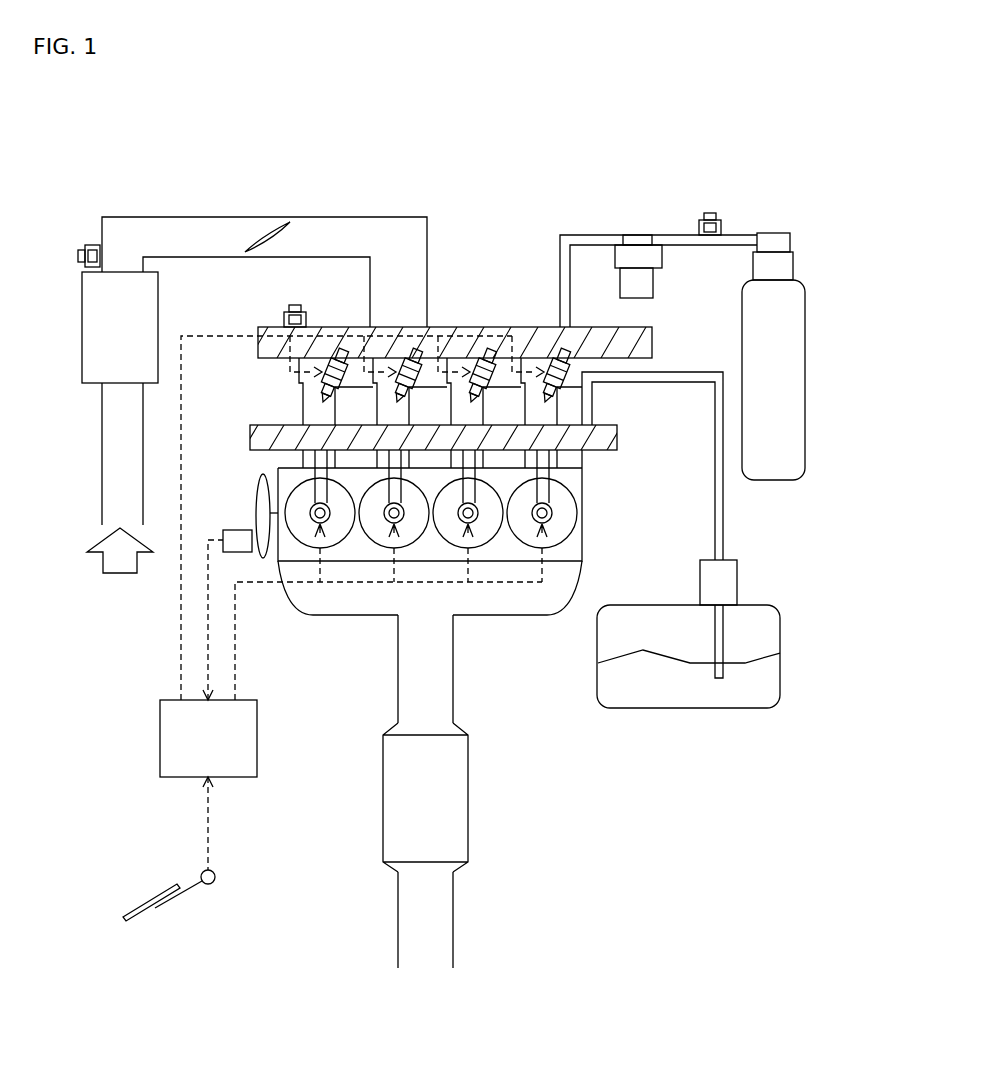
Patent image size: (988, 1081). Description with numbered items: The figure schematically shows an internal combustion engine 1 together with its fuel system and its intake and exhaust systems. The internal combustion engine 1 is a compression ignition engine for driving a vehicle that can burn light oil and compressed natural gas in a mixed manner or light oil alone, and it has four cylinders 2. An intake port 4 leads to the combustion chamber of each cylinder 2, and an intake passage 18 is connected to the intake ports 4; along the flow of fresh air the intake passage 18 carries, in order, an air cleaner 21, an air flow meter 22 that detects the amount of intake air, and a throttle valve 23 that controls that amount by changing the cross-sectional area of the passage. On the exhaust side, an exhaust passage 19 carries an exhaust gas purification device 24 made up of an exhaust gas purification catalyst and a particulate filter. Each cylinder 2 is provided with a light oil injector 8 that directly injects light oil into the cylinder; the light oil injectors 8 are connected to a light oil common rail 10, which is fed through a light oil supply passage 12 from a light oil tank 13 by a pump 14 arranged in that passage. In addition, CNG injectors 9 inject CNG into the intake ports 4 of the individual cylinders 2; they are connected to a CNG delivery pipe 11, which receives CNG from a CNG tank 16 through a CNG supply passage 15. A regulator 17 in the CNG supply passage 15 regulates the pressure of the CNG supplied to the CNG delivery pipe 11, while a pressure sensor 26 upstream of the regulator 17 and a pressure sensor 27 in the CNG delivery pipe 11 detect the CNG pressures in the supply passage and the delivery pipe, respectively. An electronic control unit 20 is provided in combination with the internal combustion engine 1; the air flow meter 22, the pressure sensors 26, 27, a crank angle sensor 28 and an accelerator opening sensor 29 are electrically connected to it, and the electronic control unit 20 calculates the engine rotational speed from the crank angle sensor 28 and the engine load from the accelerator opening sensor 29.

The internal combustion engine 1 is at (582, 540).
The cylinder 2 is at (590, 480).
The intake port 4 is at (299, 392).
The light oil injector 8 is at (553, 508).
The CNG injector 9 is at (570, 392).
The light oil common rail 10 is at (618, 437).
The CNG delivery pipe 11 is at (655, 342).
The light oil supply passage 12 is at (713, 487).
The light oil tank 13 is at (670, 708).
The pump 14 is at (737, 558).
The CNG supply passage 15 is at (593, 234).
The CNG tank 16 is at (806, 344).
The regulator 17 is at (665, 260).
The intake passage 18 is at (342, 216).
The exhaust passage 19 is at (453, 678).
The electronic control unit 20 is at (160, 738).
The air cleaner 21 is at (82, 325).
The air flow meter 22 is at (91, 244).
The throttle valve 23 is at (266, 230).
The exhaust gas purification device 24 is at (383, 780).
The pressure sensor 26 is at (707, 212).
The pressure sensor 27 is at (293, 306).
The crank angle sensor 28 is at (236, 530).
The accelerator opening sensor 29 is at (215, 877).